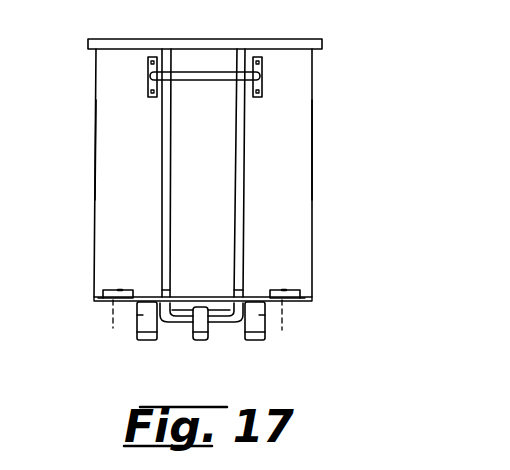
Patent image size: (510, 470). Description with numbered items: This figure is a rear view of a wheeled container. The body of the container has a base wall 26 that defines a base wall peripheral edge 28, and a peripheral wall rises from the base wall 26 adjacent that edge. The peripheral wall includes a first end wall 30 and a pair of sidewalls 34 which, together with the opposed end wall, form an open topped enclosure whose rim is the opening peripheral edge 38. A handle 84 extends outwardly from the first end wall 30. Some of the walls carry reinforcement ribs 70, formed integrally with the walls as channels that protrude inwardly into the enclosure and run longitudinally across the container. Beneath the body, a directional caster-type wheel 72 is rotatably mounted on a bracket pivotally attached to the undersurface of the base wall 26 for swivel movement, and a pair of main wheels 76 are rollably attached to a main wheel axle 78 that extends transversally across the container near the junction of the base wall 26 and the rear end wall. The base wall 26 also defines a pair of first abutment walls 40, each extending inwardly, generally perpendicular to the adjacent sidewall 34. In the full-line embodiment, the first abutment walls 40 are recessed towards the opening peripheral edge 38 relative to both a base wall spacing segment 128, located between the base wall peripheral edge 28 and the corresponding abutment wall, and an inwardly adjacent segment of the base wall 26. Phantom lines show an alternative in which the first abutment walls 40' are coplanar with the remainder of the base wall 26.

The opening peripheral edge 38 is at (250, 39).
The first end wall 30 is at (118, 85).
The sidewalls 34 is at (96, 138).
The reinforcement ribs 70 is at (165, 197).
The handle 84 is at (221, 80).
The first abutment walls 40 is at (194, 262).
The base wall peripheral edge 28 is at (98, 301).
The base wall spacing segment 128 is at (100, 301).
The first abutment walls 40' is at (201, 336).
The base wall 26 is at (176, 313).
The main wheels 76 is at (150, 341).
The directional wheel 72 is at (200, 340).
The main wheel axle 78 is at (228, 315).